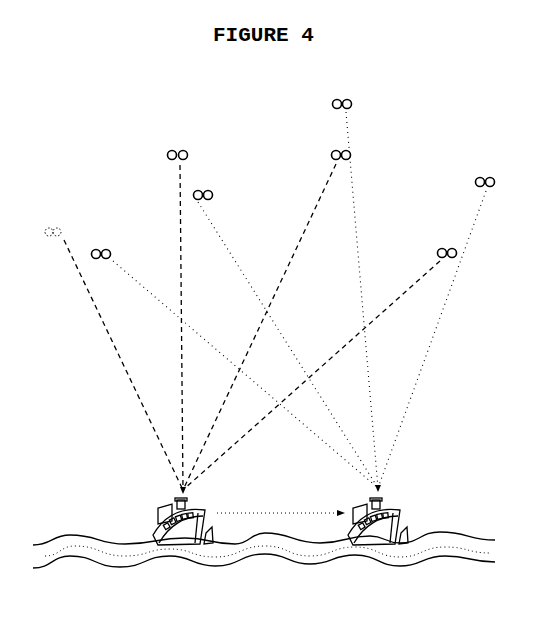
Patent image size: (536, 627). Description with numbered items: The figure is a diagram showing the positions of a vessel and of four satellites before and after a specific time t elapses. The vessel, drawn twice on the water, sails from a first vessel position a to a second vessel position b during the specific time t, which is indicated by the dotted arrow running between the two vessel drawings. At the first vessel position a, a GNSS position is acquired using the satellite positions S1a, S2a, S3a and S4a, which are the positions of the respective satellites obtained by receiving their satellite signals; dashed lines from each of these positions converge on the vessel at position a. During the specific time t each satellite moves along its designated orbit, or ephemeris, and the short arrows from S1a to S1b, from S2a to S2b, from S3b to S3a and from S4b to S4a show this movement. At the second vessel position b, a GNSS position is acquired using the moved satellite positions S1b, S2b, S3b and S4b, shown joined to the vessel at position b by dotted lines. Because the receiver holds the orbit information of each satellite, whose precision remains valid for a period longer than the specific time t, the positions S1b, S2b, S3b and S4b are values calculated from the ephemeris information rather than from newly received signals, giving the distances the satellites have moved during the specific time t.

The position of first satellite at first vessel position S1a is at (42, 243).
The position of first satellite at second vessel position S1b is at (64, 235).
The position of second satellite at first vessel position S2a is at (165, 166).
The position of second satellite at second vessel position S2b is at (186, 164).
The position of third satellite at first vessel position S3a is at (337, 148).
The position of third satellite at second vessel position S3b is at (359, 158).
The position of fourth satellite at first vessel position S4a is at (455, 245).
The position of fourth satellite at second vessel position S4b is at (430, 260).
The specific time t is at (281, 504).
The first vessel position a is at (183, 552).
The second vessel position b is at (378, 552).